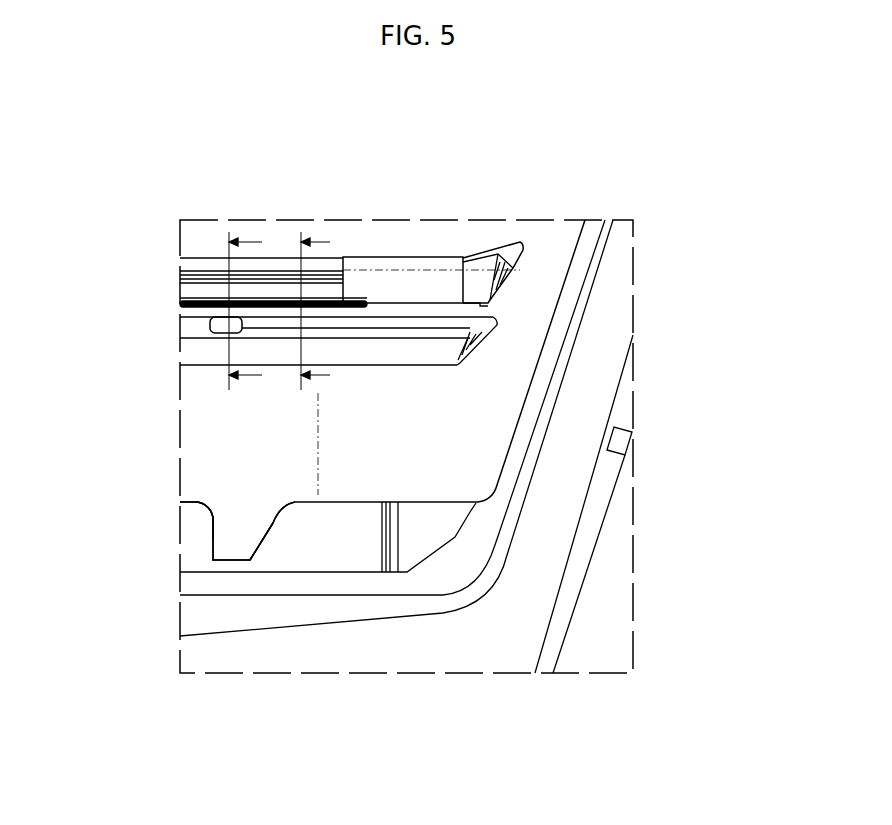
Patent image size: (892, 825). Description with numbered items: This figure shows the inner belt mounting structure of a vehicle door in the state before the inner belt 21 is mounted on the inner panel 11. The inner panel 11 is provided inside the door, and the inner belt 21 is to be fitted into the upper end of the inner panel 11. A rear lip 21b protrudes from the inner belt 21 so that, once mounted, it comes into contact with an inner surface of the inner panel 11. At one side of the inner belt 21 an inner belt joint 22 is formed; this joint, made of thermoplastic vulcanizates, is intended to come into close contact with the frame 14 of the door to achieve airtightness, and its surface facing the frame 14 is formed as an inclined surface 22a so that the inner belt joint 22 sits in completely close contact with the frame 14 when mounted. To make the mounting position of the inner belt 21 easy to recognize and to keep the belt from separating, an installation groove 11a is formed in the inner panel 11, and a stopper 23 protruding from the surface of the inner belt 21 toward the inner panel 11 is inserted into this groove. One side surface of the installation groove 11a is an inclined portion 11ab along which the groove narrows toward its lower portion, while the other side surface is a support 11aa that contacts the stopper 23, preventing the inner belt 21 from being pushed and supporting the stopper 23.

The inner panel 11 is at (407, 657).
The installation groove 11a is at (233, 547).
The support 11aa is at (215, 535).
The inclined portion 11ab is at (268, 525).
The frame 14 is at (605, 318).
The inner belt 21 is at (200, 250).
The rear lip 21b is at (397, 332).
The inner belt joint 22 is at (400, 283).
The inclined surface 22a is at (505, 270).
The stopper 23 is at (212, 317).